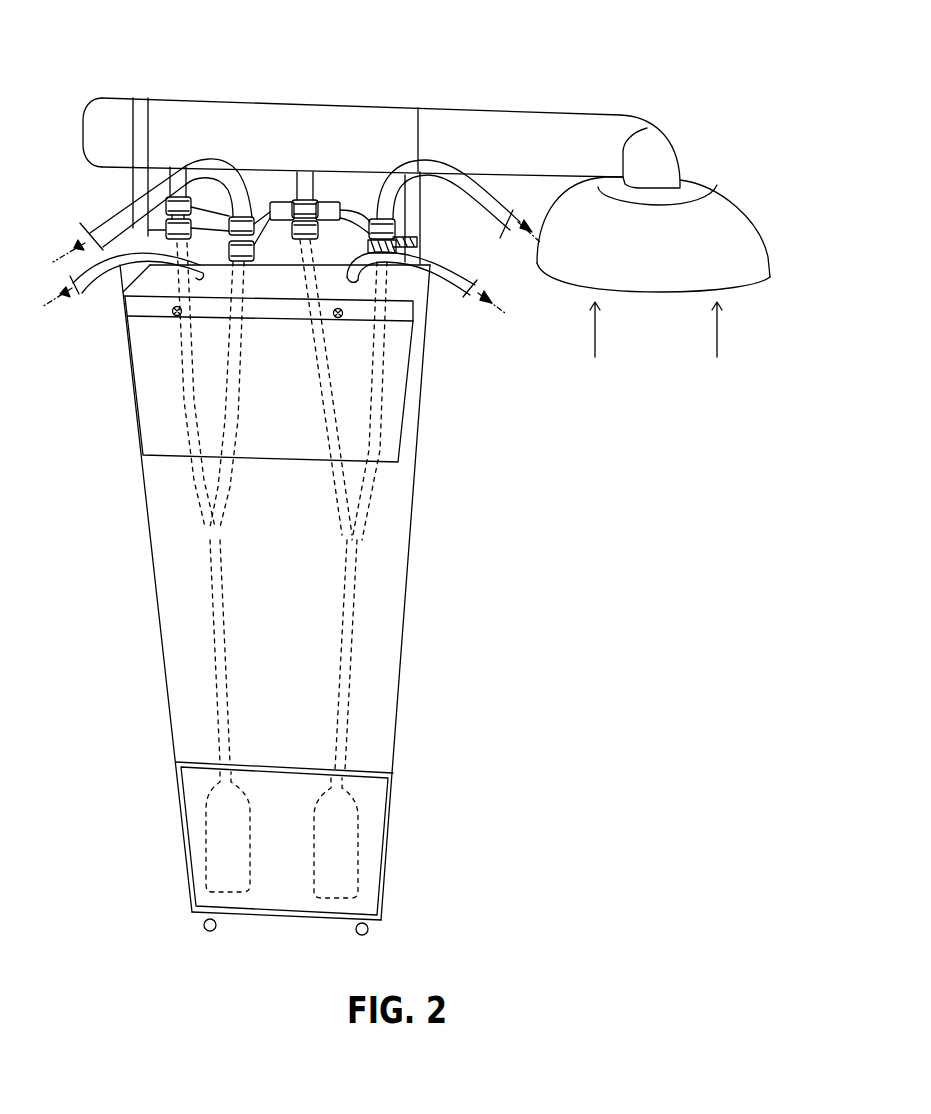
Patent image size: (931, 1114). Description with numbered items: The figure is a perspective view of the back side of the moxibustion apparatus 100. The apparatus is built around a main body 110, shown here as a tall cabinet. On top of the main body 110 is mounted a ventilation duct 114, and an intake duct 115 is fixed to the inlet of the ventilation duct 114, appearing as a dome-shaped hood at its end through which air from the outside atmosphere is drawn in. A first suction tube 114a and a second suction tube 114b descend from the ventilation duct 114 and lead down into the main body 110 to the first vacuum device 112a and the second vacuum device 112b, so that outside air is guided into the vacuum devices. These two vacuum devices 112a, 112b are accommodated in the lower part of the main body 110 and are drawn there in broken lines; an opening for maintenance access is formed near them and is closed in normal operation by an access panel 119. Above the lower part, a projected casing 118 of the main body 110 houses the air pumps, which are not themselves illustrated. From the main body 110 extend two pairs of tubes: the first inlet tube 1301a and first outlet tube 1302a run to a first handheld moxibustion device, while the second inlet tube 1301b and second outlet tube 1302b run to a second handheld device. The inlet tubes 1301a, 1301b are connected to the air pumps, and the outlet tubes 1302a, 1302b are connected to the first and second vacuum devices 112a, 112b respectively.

The apparatus 100 is at (103, 40).
The ventilation duct 114 is at (203, 98).
The first suction tube 114a is at (307, 187).
The second suction tube 114b is at (193, 198).
The intake duct 115 is at (772, 255).
The first outlet tube 1302a is at (500, 193).
The second outlet tube 1302b is at (107, 213).
The first inlet tube 1301a is at (452, 285).
The second inlet tube 1301b is at (93, 277).
The main body 110 is at (402, 682).
The projected casing 118 is at (407, 415).
The access panel 119 is at (390, 817).
The first vacuum device 112a is at (343, 848).
The second vacuum device 112b is at (228, 833).